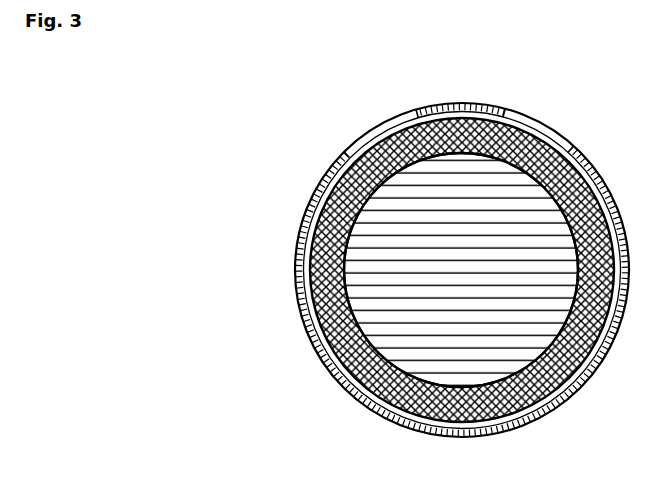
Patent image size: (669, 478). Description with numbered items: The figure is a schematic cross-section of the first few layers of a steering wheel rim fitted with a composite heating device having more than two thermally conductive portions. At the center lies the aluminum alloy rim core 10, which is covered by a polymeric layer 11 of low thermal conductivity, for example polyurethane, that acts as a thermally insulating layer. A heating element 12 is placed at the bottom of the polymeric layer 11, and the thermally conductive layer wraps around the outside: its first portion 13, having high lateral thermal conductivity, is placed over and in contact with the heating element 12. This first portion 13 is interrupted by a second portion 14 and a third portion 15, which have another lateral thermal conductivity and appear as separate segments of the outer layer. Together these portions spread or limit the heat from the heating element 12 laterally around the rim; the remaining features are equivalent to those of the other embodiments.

The aluminum alloy rim core 10 is at (458, 257).
The polymeric layer 11 is at (585, 322).
The heating element 12 is at (390, 415).
The first portion of the layer with high lateral thermal conductivity 13 is at (318, 340).
The second portion of the layer with another lateral thermal conductivity 14 is at (373, 139).
The third portion of the layer with another lateral thermal conductivity 15 is at (563, 150).